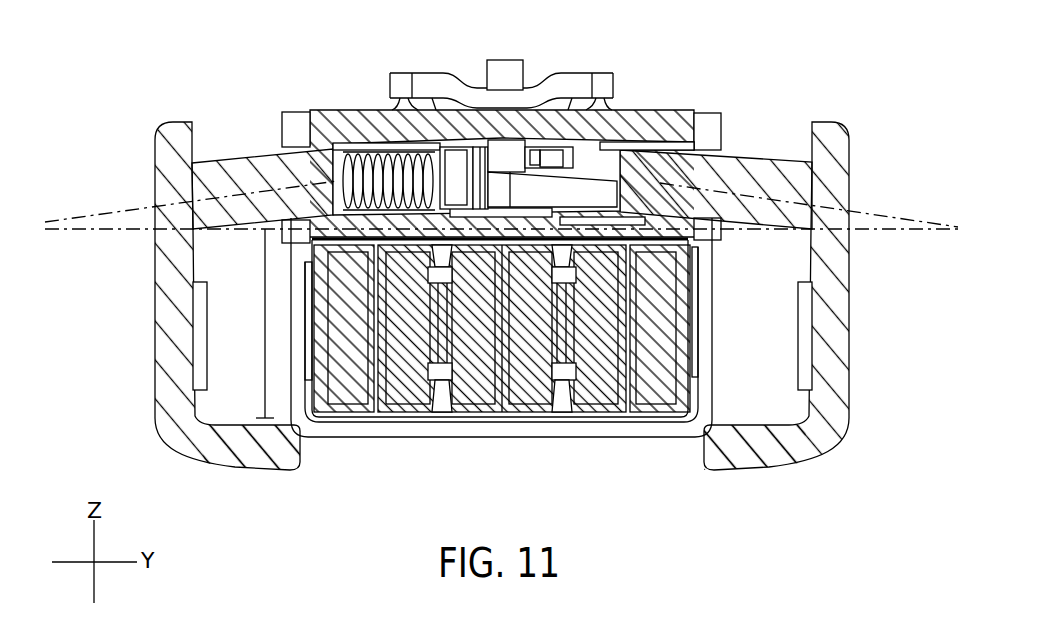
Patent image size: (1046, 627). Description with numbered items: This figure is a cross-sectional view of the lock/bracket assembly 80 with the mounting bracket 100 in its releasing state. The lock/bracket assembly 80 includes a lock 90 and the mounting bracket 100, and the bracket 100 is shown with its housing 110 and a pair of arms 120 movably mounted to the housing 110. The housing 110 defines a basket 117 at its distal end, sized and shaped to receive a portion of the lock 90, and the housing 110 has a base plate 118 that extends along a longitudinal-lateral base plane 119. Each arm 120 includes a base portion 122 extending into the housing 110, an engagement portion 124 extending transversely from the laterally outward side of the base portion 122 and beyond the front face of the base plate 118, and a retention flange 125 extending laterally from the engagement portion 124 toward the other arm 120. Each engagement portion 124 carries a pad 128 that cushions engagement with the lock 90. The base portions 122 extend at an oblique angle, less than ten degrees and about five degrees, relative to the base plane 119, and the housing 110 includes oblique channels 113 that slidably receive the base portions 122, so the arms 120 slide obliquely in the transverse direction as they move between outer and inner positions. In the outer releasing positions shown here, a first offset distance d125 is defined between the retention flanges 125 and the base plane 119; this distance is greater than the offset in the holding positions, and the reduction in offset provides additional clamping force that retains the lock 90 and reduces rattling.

The lock/bracket assembly 80 is at (177, 46).
The lock 90 is at (522, 353).
The mounting bracket 100 is at (405, 46).
The housing 110 is at (712, 117).
The oblique channels 113 is at (345, 151).
The basket 117 is at (497, 438).
The base plate 118 is at (690, 256).
The base plane 119 is at (61, 232).
The arms 120 is at (500, 323).
The base portion 122 is at (237, 158).
The engagement portion 124 is at (155, 308).
The retention flange 125 is at (240, 471).
The pad 128 is at (798, 330).
The first offset distance d125 is at (243, 323).